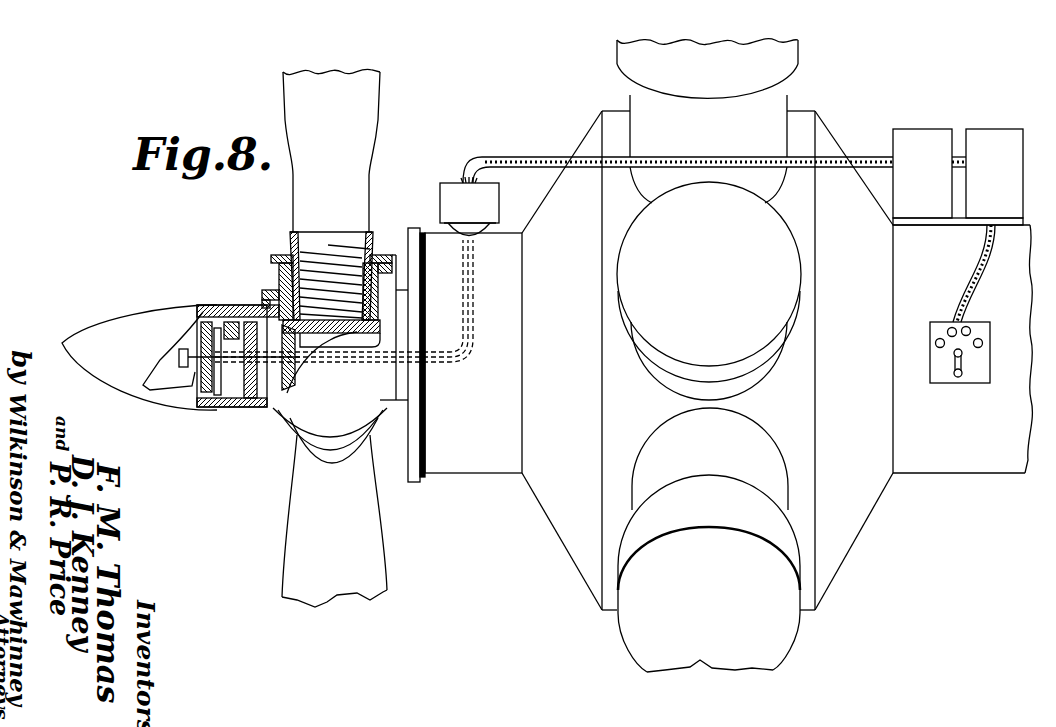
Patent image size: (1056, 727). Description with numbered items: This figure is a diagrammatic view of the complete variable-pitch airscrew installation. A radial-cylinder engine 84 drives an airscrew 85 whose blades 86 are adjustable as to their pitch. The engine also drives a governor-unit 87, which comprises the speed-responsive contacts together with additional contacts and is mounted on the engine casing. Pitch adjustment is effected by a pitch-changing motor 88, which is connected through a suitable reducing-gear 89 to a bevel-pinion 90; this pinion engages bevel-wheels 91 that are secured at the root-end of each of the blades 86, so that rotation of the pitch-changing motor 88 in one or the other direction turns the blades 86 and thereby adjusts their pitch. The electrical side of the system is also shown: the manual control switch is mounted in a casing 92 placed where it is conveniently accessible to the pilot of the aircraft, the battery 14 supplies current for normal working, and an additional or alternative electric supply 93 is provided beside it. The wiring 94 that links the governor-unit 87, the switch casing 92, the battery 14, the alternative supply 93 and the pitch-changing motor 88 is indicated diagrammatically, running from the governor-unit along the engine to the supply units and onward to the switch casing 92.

The battery 14 is at (997, 143).
The radial-cylinder engine 84 is at (610, 512).
The airscrew 85 is at (327, 415).
The blades 86 is at (362, 120).
The engine-driven governor-unit 87 is at (452, 198).
The pitch-changing motor 88 is at (165, 365).
The reducing-gear 89 is at (183, 380).
The bevel-pinion 90 is at (290, 383).
The bevel-wheels 91 is at (358, 333).
The casing 92 is at (952, 365).
The additional or alternative electric supply 93 is at (912, 140).
The wiring 94 is at (708, 160).